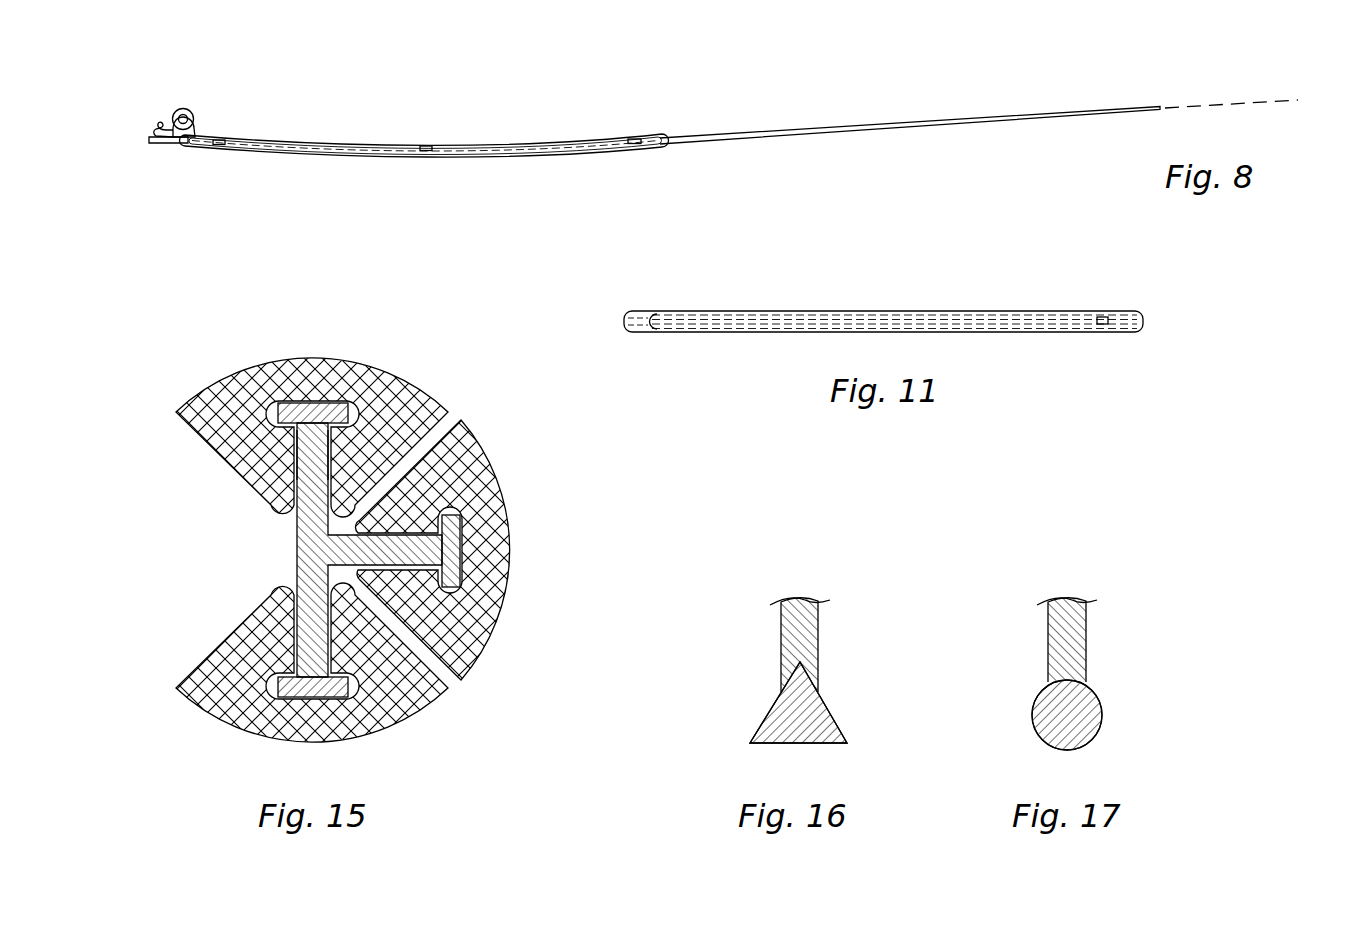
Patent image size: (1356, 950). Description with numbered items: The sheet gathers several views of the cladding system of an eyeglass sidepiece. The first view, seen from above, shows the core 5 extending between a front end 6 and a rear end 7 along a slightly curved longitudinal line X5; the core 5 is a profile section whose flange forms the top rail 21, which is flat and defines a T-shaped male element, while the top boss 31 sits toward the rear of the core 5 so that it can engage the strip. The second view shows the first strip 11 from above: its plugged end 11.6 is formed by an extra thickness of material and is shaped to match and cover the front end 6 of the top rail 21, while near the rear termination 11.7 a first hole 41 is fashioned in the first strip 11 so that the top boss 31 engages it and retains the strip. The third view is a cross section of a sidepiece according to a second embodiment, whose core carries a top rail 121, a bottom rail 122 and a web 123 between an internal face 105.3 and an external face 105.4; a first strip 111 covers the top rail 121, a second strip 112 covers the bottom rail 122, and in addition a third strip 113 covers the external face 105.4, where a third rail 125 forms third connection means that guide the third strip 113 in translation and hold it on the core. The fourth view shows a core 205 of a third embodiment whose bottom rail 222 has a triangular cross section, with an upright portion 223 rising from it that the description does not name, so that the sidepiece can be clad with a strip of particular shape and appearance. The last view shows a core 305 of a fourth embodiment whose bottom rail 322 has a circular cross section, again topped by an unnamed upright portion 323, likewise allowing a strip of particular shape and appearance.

In FIG. 8, the front end 6 is at (142, 98).
In FIG. 8, the core 5 is at (449, 147).
In FIG. 8, the top boss 31 is at (632, 142).
In FIG. 8, the rear end 7 is at (1086, 70).
In FIG. 8, the top rail 21 is at (181, 148).
In FIG. 8, the longitudinal line X5 is at (1247, 103).
In FIG. 11, the first strip 11 is at (890, 283).
In FIG. 11, the plugged end 11.6 is at (643, 317).
In FIG. 11, the rear termination 11.7 is at (1073, 321).
In FIG. 11, the first hole 41 is at (1110, 308).
In FIG. 15, the first strip 111 is at (250, 364).
In FIG. 15, the second strip 112 is at (252, 738).
In FIG. 15, the third strip 113 is at (480, 617).
In FIG. 15, the top rail 121 is at (292, 412).
In FIG. 15, the bottom rail 122 is at (292, 687).
In FIG. 15, the web 123 is at (300, 537).
In FIG. 15, the third rail 125 is at (453, 573).
In FIG. 15, the internal face 105.3 is at (285, 455).
In FIG. 15, the external face 105.4 is at (345, 449).
In FIG. 16, the core 205 is at (806, 566).
In FIG. 16, the web 223 is at (800, 637).
In FIG. 16, the bottom rail 222 is at (808, 717).
In FIG. 17, the core 305 is at (1082, 568).
In FIG. 17, the web 323 is at (1072, 637).
In FIG. 17, the bottom rail 322 is at (1080, 717).